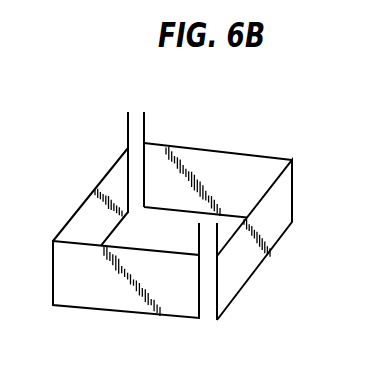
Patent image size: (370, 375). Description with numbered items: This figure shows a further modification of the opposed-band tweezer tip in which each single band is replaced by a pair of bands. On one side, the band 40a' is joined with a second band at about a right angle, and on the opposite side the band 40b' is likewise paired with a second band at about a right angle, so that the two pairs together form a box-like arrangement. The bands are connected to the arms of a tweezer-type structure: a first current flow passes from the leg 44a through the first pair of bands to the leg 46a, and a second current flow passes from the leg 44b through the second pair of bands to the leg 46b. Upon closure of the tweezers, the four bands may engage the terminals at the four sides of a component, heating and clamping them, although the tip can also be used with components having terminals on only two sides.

The band 40a' is at (75, 197).
The band 40b' is at (220, 167).
The leg 44a is at (128, 127).
The leg 44b is at (172, 131).
The leg 46a is at (199, 232).
The leg 46b is at (217, 231).